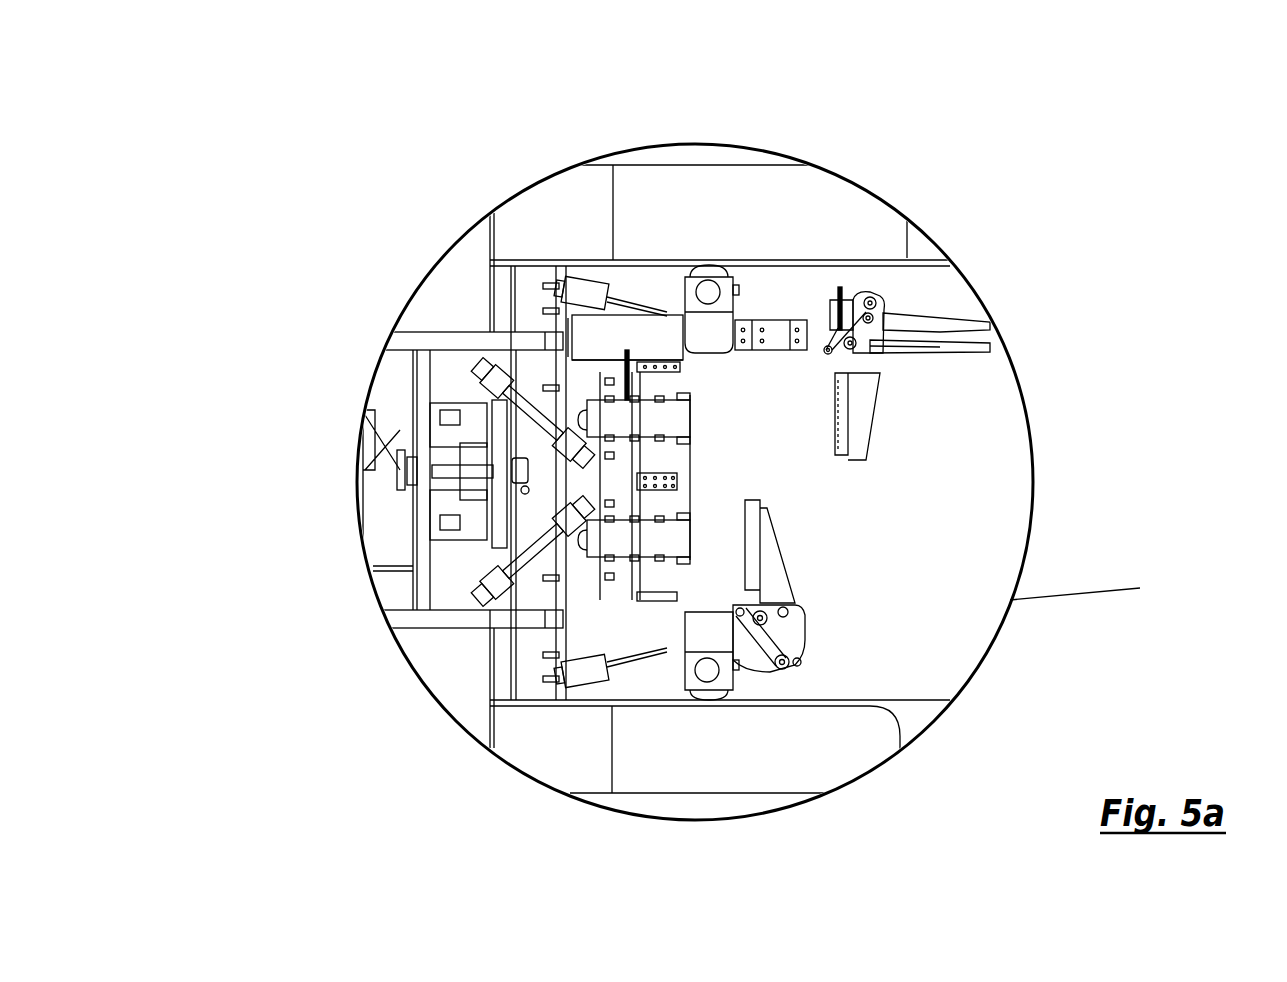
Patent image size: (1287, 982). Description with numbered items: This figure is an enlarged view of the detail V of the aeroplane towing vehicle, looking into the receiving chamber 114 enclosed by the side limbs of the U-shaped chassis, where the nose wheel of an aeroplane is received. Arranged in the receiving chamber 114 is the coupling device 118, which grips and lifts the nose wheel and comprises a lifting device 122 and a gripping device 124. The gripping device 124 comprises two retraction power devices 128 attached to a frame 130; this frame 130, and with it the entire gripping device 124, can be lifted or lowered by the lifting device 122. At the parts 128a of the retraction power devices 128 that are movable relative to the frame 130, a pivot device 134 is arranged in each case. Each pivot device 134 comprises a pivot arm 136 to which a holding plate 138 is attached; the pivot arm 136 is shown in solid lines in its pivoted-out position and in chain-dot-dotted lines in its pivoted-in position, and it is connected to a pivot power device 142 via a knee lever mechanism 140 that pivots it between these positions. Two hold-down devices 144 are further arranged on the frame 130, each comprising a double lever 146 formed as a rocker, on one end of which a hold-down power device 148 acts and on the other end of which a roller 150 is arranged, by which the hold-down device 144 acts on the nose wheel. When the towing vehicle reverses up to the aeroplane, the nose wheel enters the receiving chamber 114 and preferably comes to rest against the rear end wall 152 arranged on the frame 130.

The receiving chamber 114 is at (960, 517).
The coupling device 118 is at (463, 480).
The lifting device 122 is at (510, 483).
The gripping device 124 is at (905, 127).
The retraction power device 128 is at (640, 335).
The movable part of retraction power device 128a is at (777, 335).
The frame 130 is at (613, 580).
The pivot device 134 is at (909, 531).
The pivot arm 136 is at (938, 327).
The holding plate 138 is at (945, 347).
The knee lever mechanism 140 is at (862, 318).
The pivot power device 142 is at (885, 390).
The hold-down device 144 is at (750, 412).
The double lever 146 is at (657, 420).
The hold-down power device 148 is at (587, 418).
The roller 150 is at (683, 427).
The rear end wall 152 is at (667, 458).
The detail V is at (1092, 585).